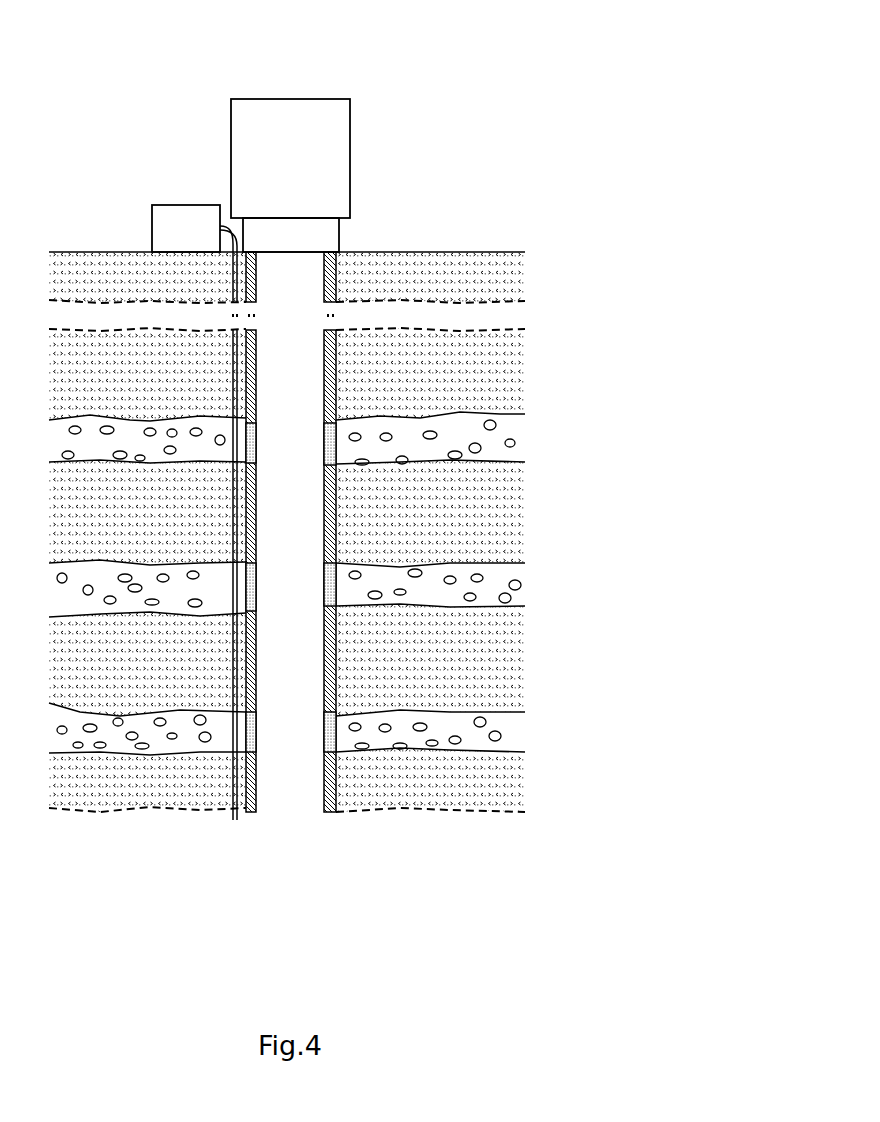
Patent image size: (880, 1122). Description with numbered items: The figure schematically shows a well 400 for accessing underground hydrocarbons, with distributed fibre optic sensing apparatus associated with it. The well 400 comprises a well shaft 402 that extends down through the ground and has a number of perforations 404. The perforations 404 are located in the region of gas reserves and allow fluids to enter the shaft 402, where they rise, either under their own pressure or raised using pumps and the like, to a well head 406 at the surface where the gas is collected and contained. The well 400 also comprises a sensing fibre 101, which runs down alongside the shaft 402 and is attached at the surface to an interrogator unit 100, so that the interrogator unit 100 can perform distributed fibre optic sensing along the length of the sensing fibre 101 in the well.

The well 400 is at (463, 98).
The well head 406 is at (302, 154).
The interrogator unit 100 is at (205, 239).
The sensing fibre 101 is at (232, 812).
The well shaft 402 is at (323, 797).
The perforations 404 is at (323, 443).